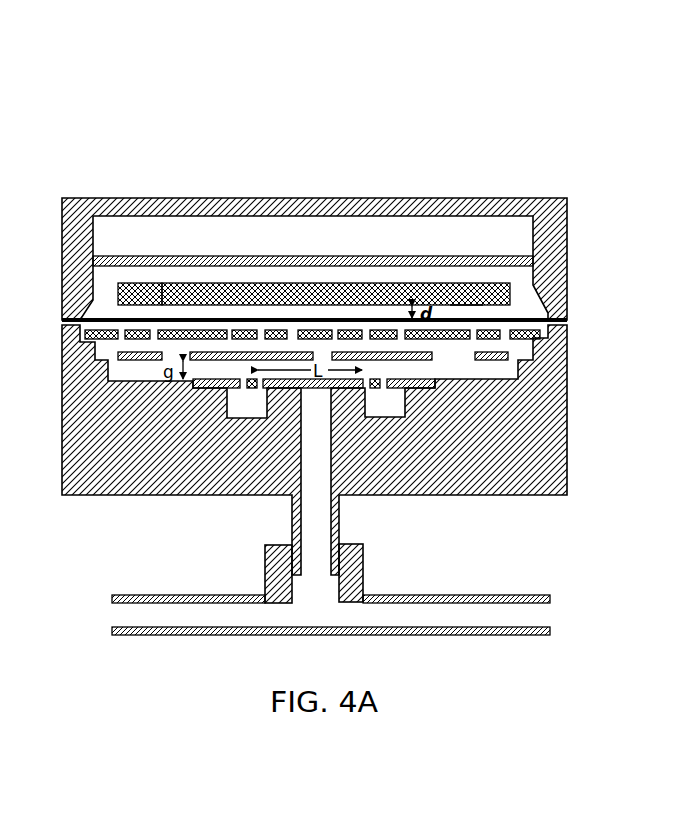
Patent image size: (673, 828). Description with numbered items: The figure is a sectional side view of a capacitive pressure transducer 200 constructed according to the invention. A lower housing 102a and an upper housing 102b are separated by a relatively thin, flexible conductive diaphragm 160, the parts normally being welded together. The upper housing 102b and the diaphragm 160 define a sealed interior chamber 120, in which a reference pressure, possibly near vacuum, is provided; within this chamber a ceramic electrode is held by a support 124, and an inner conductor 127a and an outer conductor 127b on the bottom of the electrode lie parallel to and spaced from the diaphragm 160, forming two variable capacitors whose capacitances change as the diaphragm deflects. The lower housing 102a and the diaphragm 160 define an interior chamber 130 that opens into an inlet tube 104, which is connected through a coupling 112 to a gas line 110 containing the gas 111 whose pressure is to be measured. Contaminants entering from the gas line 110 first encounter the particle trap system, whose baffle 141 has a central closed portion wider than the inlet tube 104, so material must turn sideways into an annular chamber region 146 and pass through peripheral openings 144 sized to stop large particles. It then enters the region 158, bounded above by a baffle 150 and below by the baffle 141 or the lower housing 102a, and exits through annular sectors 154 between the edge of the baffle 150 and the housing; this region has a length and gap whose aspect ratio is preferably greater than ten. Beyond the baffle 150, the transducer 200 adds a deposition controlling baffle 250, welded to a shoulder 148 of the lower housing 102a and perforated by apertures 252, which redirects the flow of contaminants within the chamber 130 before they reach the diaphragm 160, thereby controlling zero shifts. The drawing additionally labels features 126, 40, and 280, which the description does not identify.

The upper housing 102b is at (530, 197).
The lower housing 102a is at (465, 495).
The sealed interior chamber 120 is at (188, 245).
The support 124 is at (268, 256).
The inner conductor 127a is at (278, 285).
The outer conductor 127b is at (157, 285).
The membrane / diaphragm 126 is at (484, 305).
The diaphragm 160 is at (538, 328).
The shoulder 148 is at (540, 336).
The interior chamber 130 is at (472, 367).
The baffle 150 is at (487, 362).
The apertures 252 is at (400, 340).
The deposition controlling baffle 250 is at (243, 341).
The annular sectors 154 is at (110, 362).
The region 158 is at (133, 370).
The openings 144 is at (240, 392).
The channel 40 is at (312, 390).
The baffle 141 is at (338, 389).
The annular chamber region 146 is at (403, 413).
The inlet tube 104 is at (342, 512).
The coupling 112 is at (364, 578).
The gas line 110 is at (462, 594).
The gas 111 is at (367, 625).
The opening 280 is at (313, 603).
The capacitive pressure transducer 200 is at (85, 512).